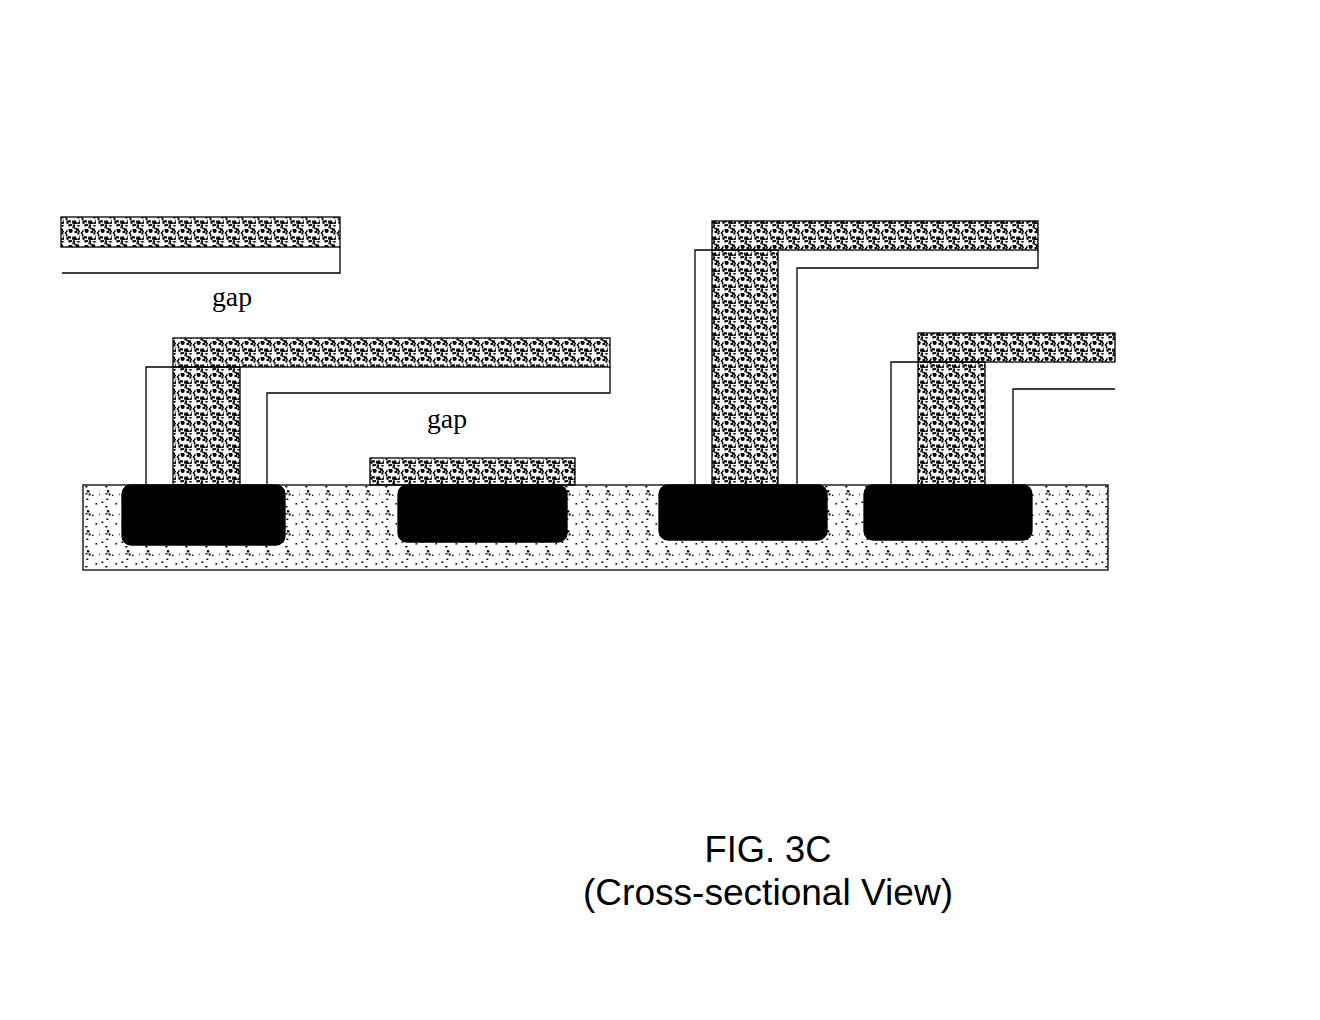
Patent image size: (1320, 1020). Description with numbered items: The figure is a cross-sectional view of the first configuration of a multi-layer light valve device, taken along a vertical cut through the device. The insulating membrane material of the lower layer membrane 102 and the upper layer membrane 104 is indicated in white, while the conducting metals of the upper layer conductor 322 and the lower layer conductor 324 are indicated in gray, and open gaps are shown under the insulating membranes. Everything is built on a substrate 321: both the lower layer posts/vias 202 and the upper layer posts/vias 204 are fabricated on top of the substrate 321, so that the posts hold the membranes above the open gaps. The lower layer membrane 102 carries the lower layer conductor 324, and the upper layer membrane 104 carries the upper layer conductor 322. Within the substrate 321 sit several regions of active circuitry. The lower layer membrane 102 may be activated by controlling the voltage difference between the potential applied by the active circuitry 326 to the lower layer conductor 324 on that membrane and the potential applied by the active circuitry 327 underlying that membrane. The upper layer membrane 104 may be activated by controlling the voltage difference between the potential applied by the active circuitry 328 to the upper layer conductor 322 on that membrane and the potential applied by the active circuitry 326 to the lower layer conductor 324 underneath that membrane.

The lower layer membrane 102 is at (562, 370).
The upper layer membrane 104 is at (860, 250).
The lower layer posts/vias 202 is at (1017, 437).
The upper layer posts/vias 204 is at (811, 362).
The substrate 321 is at (1062, 556).
The upper layer conductor 322 is at (235, 225).
The lower layer conductor 324 is at (432, 344).
The active circuitry 326 is at (194, 515).
The active circuitry 327 is at (459, 528).
The active circuitry 328 is at (752, 513).